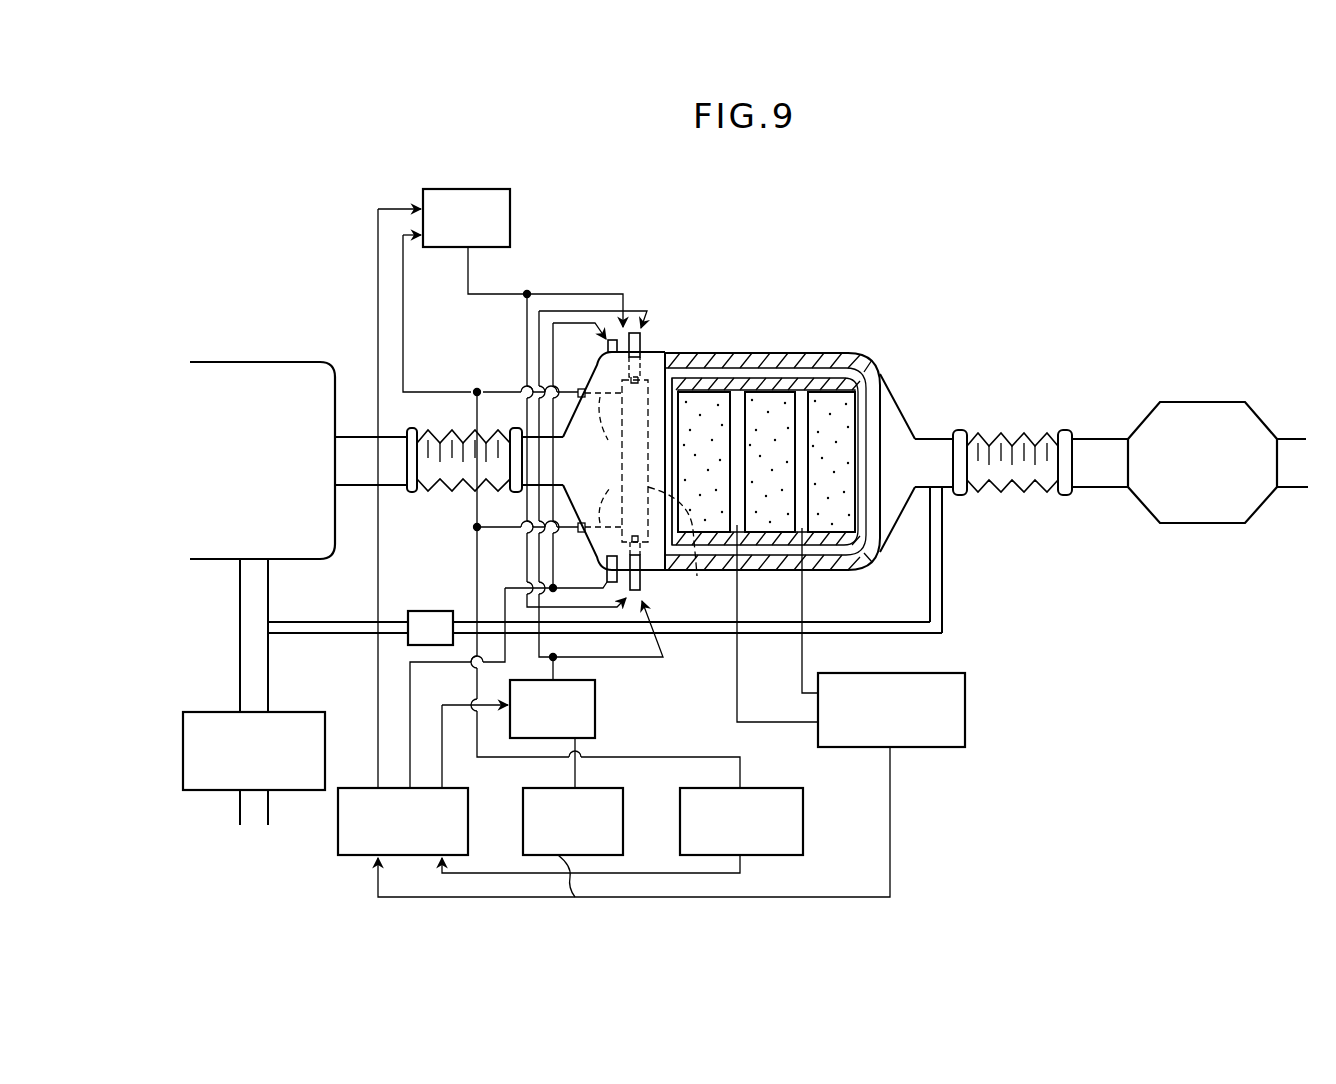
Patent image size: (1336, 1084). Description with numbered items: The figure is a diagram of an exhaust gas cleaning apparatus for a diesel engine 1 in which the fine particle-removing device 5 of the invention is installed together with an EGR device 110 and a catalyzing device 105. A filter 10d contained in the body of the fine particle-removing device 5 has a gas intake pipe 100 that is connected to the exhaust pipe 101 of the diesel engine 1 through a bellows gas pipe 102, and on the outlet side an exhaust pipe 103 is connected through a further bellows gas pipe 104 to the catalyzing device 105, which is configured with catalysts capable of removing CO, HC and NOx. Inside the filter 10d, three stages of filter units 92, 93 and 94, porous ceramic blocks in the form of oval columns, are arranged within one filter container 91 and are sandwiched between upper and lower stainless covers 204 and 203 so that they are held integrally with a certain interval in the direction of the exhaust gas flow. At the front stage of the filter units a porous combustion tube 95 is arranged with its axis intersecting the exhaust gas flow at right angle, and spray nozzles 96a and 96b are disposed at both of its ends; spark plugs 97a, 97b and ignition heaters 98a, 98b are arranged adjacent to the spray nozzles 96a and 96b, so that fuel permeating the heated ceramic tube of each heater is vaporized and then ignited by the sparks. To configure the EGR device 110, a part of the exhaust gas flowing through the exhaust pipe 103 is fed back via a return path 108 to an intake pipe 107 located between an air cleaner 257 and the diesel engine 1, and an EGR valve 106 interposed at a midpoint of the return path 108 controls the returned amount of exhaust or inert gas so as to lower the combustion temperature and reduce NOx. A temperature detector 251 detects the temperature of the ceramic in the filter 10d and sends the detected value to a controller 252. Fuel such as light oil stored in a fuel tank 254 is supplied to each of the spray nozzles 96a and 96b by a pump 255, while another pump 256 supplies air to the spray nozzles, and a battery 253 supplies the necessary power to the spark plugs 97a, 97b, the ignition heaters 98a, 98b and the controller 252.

The diesel engine 1 is at (264, 362).
The fine particle-removing device 5 is at (734, 487).
The filter 10d is at (791, 344).
The filter container 91 is at (744, 351).
The filter unit 92 is at (718, 391).
The filter unit 93 is at (760, 386).
The filter unit 94 is at (858, 370).
The porous combustion tube 95 is at (675, 493).
The spray nozzle 96a is at (641, 334).
The spray nozzle 96b is at (639, 591).
The spark plug 97a is at (600, 351).
The spark plug 97b is at (606, 568).
The ignition heater 98a is at (600, 421).
The ignition heater 98b is at (601, 499).
The gas intake pipe 100 is at (533, 463).
The exhaust pipe 101 is at (393, 480).
The bellows gas pipe 102 is at (452, 487).
The exhaust pipe 103 is at (941, 439).
The bellows gas pipe 104 is at (1026, 438).
The catalyzing device 105 is at (1205, 402).
The EGR valve 106 is at (436, 611).
The intake pipe 107 is at (240, 617).
The return path 108 is at (945, 612).
The EGR device 110 is at (963, 566).
The stainless cover 203 is at (822, 557).
The stainless cover 204 is at (818, 368).
The temperature detector 251 is at (965, 704).
The controller 252 is at (352, 857).
The battery 253 is at (805, 827).
The fuel tank 254 is at (575, 897).
The pump 255 is at (597, 716).
The pump 256 is at (489, 189).
The air cleaner 257 is at (208, 790).